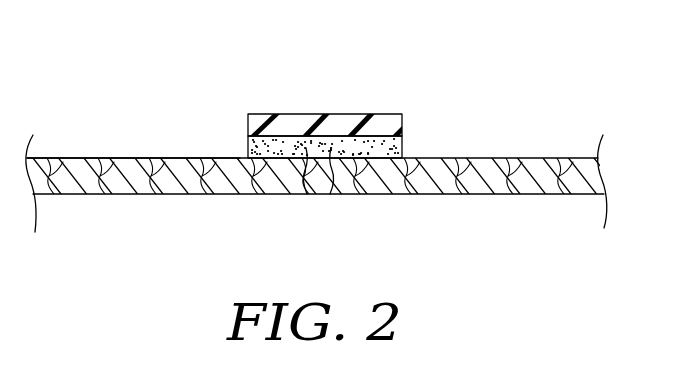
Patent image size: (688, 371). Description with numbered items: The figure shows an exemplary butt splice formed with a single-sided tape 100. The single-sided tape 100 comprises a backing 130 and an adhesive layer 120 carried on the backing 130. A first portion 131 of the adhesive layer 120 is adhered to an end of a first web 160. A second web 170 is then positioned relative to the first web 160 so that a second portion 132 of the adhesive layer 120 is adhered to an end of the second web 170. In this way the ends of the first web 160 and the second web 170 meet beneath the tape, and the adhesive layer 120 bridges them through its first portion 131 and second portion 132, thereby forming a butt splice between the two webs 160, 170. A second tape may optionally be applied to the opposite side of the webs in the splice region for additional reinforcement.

The single-sided tape 100 is at (273, 92).
The adhesive layer 120 is at (401, 148).
The backing 130 is at (345, 114).
The first portion of adhesive layer 131 is at (306, 165).
The second portion of adhesive layer 132 is at (342, 160).
The first web 160 is at (120, 158).
The second web 170 is at (527, 158).